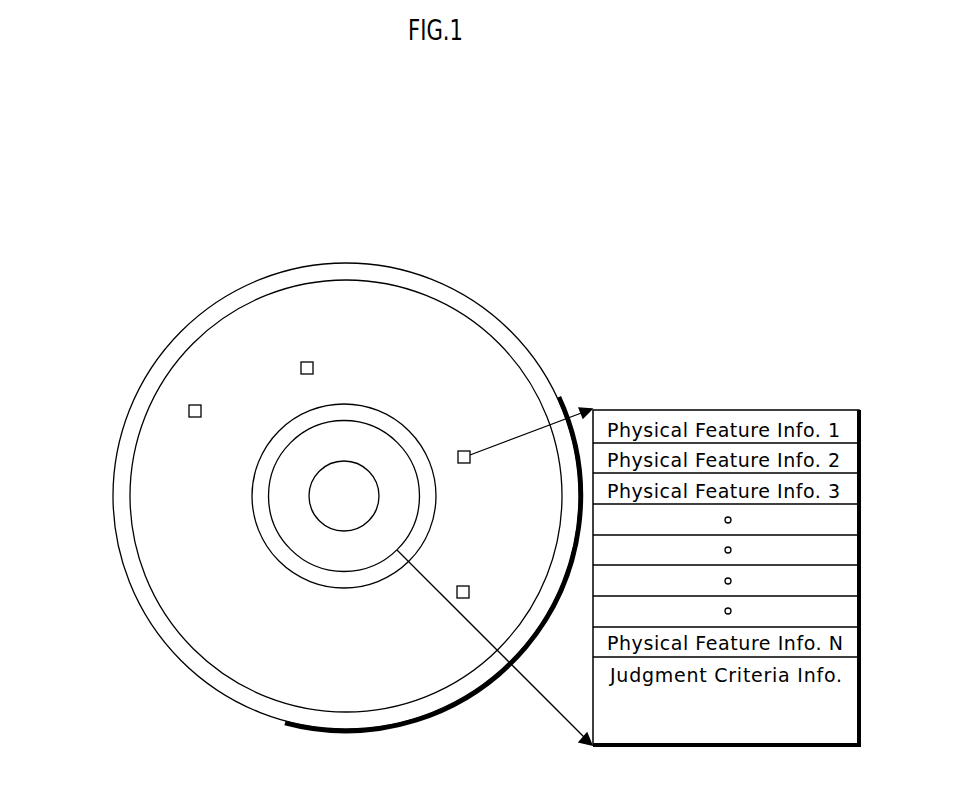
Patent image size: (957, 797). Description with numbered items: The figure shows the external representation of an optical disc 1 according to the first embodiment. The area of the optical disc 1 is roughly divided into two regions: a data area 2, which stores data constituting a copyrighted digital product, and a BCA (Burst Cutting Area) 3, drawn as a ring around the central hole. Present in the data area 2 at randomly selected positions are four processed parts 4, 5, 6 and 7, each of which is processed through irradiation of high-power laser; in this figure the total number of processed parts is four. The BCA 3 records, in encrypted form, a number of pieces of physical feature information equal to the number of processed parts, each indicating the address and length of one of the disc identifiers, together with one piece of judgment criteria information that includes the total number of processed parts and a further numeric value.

The optical disc 1 is at (233, 281).
The data area 2 is at (336, 343).
The BCA (Burst Cutting Area) 3 is at (390, 430).
The processed part 4 is at (298, 368).
The processed part 5 is at (186, 411).
The processed part 6 is at (455, 456).
The processed part 7 is at (454, 590).